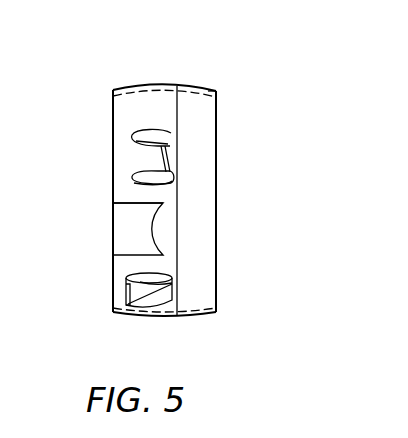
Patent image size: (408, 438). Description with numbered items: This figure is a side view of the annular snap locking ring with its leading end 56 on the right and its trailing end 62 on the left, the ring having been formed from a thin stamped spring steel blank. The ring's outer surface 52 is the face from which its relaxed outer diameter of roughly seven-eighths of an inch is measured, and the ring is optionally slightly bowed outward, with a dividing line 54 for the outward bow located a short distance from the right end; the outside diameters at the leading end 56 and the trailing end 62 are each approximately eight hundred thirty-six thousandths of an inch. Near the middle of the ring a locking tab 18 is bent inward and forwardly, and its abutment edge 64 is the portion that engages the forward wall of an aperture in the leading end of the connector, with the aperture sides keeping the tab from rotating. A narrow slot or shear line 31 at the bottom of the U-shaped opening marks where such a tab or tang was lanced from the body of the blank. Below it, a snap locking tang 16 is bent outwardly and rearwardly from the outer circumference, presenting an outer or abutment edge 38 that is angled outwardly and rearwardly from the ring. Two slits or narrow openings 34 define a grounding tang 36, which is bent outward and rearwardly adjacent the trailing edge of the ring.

The snap locking tangs 16 is at (155, 295).
The locking tab 18 is at (150, 158).
The narrow slot or shear line 31 is at (125, 281).
The slits or narrow openings 34 is at (130, 203).
The grounding tangs 36 is at (120, 229).
The outer or abutment edges 38 is at (125, 300).
The outer surface 52 is at (148, 84).
The dividing line 54 is at (193, 86).
The leading end 56 is at (216, 91).
The trailing end 62 is at (113, 90).
The abutment edge 64 is at (171, 150).